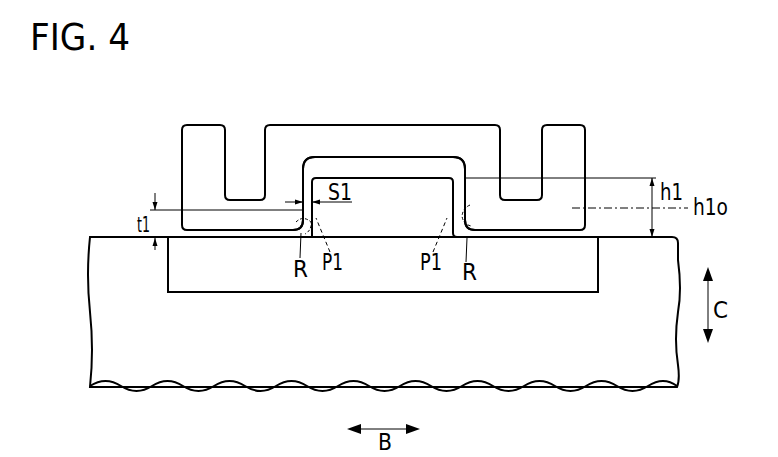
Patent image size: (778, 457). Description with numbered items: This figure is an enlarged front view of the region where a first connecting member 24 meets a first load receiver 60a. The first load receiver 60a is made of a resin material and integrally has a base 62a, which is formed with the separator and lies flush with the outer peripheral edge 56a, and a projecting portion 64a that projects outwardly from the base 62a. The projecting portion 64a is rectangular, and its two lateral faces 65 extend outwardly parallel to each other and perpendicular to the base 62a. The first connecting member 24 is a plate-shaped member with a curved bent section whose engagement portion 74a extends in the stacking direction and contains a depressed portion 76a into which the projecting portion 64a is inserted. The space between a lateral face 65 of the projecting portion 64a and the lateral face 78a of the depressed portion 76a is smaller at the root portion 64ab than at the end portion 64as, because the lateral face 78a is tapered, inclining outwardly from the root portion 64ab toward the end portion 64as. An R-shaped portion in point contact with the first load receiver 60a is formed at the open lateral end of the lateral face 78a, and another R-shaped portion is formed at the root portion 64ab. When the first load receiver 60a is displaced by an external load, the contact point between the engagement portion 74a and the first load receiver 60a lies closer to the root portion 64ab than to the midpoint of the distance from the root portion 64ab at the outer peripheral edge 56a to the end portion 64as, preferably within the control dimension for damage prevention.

The first connecting member 24 is at (482, 125).
The outer peripheral edge 56a is at (120, 237).
The first load receiver 60a is at (249, 222).
The base 62a is at (540, 286).
The projecting portion 64a is at (380, 197).
The root portion 64ab is at (445, 236).
The end portion 64as is at (424, 175).
The lateral face 65 is at (303, 193).
The engagement portion 74a is at (348, 133).
The depressed portion 76a is at (453, 160).
The lateral face of depressed portion 78a is at (310, 157).